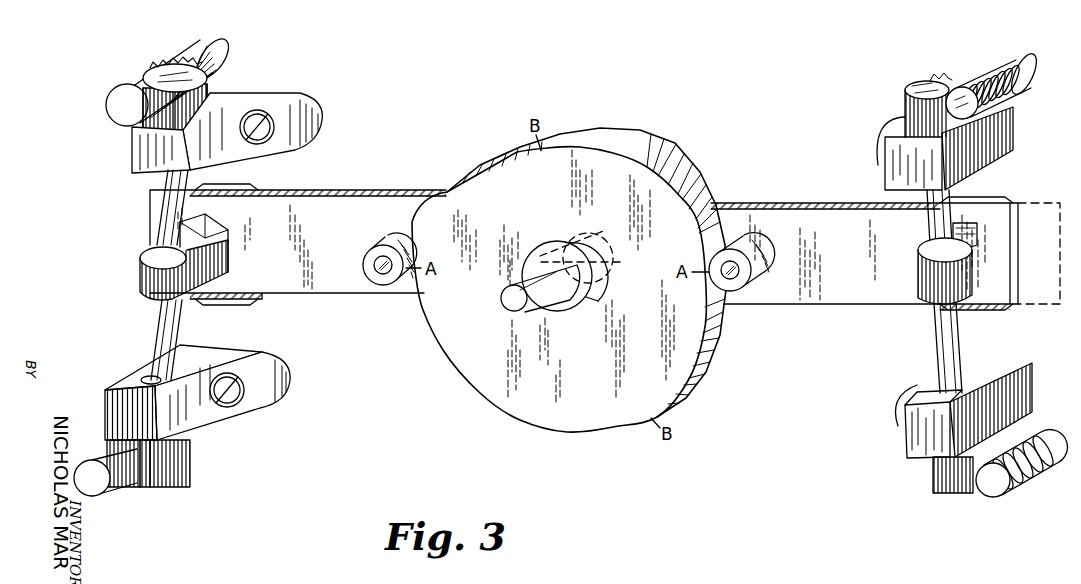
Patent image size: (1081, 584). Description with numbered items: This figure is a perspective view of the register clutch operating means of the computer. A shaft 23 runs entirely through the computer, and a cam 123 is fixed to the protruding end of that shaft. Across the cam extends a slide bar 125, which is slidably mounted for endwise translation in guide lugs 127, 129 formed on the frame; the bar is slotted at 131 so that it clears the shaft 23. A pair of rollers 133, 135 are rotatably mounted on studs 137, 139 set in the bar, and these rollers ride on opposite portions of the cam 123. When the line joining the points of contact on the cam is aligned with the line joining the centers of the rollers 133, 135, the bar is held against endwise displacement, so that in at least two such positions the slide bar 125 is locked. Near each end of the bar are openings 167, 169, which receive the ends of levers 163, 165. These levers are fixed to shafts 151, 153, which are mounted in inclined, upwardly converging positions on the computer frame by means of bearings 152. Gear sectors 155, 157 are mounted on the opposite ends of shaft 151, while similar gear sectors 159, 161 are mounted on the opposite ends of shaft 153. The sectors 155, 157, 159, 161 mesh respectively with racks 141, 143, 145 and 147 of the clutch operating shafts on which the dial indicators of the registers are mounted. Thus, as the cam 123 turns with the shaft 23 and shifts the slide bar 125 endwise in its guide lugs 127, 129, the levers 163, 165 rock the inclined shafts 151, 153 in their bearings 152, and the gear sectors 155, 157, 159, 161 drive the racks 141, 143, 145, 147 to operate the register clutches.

The shaft 23 is at (515, 306).
The cam 123 is at (530, 420).
The slide bar 125 is at (820, 298).
The guide lug 127 is at (973, 201).
The guide lug 129 is at (250, 198).
The slot 131 is at (549, 250).
The roller 133 is at (757, 256).
The roller 135 is at (378, 247).
The stud 137 is at (740, 276).
The stud 139 is at (382, 270).
The rack 141 is at (1008, 92).
The rack 143 is at (1010, 484).
The rack 145 is at (222, 43).
The rack 147 is at (108, 486).
The shaft 151 is at (935, 216).
The bearing 152 is at (318, 114).
The shaft 153 is at (171, 208).
The gear sector 155 is at (906, 94).
The gear sector 157 is at (932, 478).
The gear sector 159 is at (210, 94).
The gear sector 161 is at (158, 473).
The lever 163 is at (972, 261).
The lever 165 is at (222, 250).
The opening 167 is at (972, 288).
The opening 169 is at (224, 276).